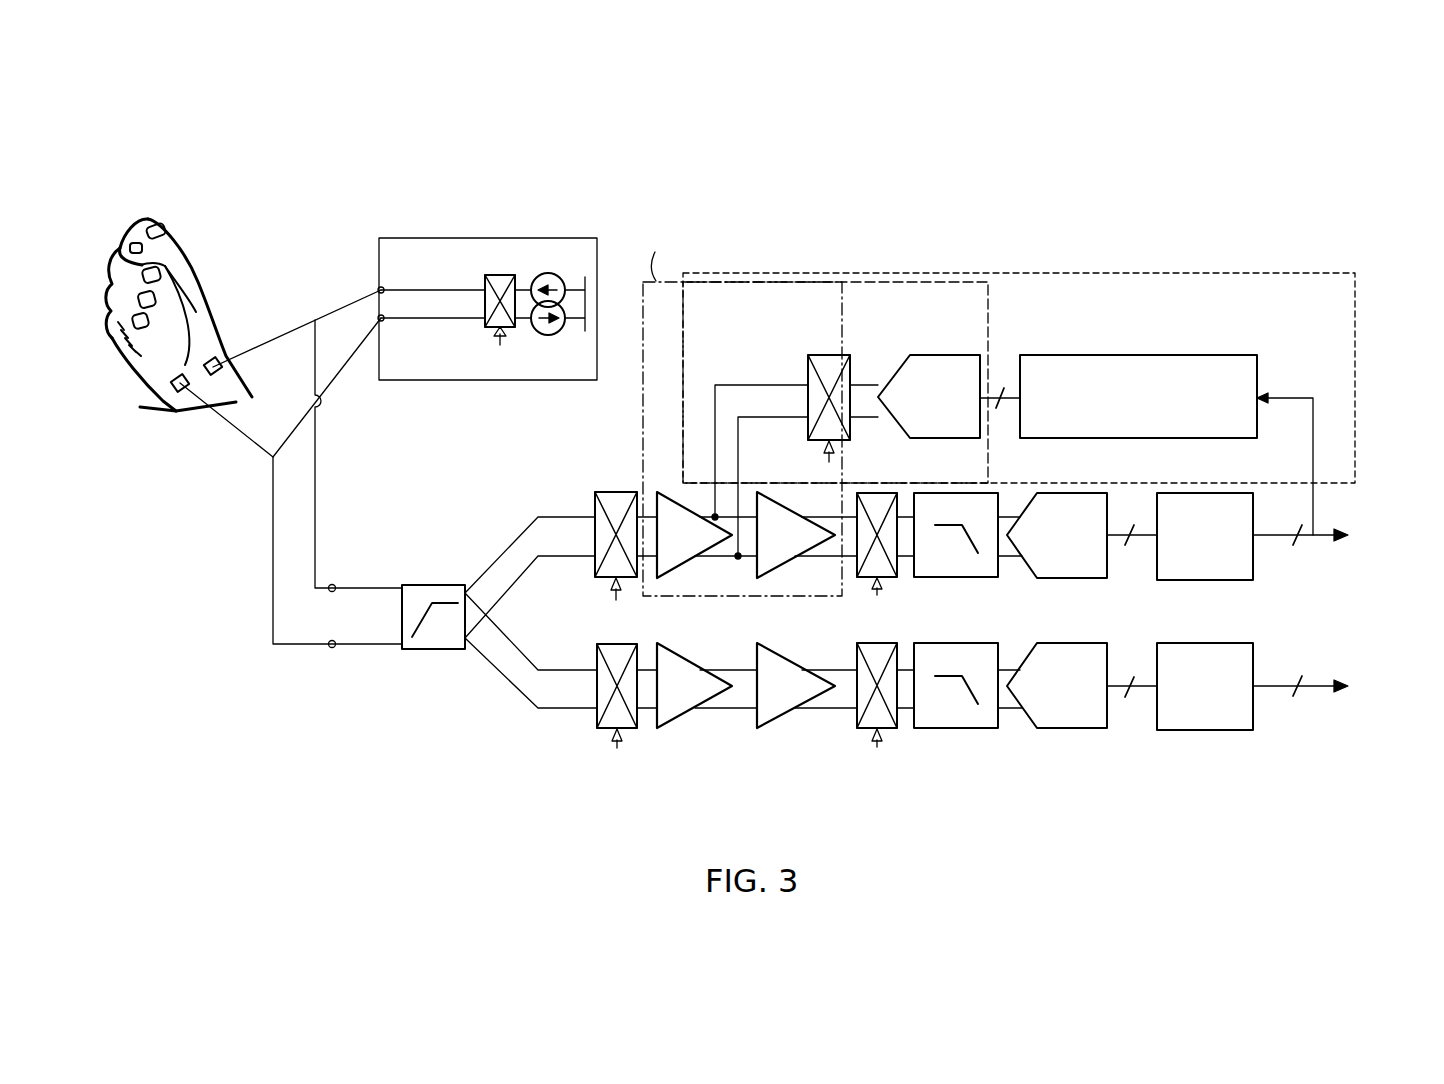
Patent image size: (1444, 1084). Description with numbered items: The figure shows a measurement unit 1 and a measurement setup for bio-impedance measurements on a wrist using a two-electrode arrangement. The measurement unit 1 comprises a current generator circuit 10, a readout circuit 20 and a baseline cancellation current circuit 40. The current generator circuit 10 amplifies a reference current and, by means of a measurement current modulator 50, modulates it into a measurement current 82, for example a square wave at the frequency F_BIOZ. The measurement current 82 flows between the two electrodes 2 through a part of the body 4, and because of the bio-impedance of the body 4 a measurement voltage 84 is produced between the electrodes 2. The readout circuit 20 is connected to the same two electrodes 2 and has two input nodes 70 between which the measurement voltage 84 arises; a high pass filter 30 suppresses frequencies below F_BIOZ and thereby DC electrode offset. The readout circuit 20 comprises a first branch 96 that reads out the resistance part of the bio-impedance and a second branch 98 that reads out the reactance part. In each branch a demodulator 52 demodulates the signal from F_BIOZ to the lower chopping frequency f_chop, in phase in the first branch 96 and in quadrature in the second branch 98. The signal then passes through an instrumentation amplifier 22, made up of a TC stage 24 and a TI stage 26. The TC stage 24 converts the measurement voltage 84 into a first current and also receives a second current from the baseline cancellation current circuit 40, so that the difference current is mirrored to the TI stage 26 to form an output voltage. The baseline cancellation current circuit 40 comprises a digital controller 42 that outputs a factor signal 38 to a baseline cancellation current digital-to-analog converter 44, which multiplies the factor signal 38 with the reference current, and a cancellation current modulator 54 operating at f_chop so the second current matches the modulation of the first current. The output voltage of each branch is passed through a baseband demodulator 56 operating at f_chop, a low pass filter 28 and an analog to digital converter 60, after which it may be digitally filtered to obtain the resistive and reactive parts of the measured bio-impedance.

The measurement unit 1 is at (1357, 188).
The electrodes 2 is at (219, 361).
The body 4 is at (213, 272).
The current generator circuit 10 is at (487, 258).
The measurement current modulator 50 is at (495, 272).
The measurement current 82 is at (480, 263).
The input nodes 70 is at (334, 586).
The high pass filter 30 is at (432, 585).
The measurement voltage 84 is at (392, 642).
The demodulator 52 is at (600, 492).
The instrumentation amplifier 22 is at (672, 493).
The TC stage 24 is at (688, 560).
The TI stage 26 is at (785, 560).
The baseline cancellation current circuit 40 is at (893, 272).
The cancellation current modulator 54 is at (825, 356).
The baseline cancellation current digital-to-analog converter 44 is at (912, 356).
The factor signal 38 is at (1012, 400).
The digital controller 42 is at (1195, 356).
The baseband demodulator 56 is at (892, 577).
The low pass filter 28 is at (975, 578).
The analog to digital converter 60 is at (1057, 579).
The readout circuit 20 is at (1130, 730).
The first branch 96 is at (1322, 550).
The second branch 98 is at (1322, 700).